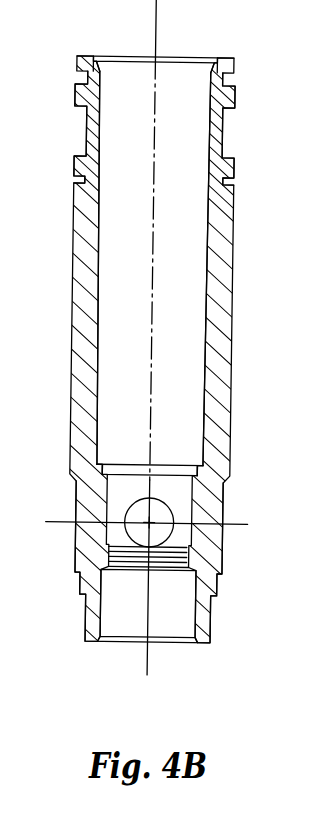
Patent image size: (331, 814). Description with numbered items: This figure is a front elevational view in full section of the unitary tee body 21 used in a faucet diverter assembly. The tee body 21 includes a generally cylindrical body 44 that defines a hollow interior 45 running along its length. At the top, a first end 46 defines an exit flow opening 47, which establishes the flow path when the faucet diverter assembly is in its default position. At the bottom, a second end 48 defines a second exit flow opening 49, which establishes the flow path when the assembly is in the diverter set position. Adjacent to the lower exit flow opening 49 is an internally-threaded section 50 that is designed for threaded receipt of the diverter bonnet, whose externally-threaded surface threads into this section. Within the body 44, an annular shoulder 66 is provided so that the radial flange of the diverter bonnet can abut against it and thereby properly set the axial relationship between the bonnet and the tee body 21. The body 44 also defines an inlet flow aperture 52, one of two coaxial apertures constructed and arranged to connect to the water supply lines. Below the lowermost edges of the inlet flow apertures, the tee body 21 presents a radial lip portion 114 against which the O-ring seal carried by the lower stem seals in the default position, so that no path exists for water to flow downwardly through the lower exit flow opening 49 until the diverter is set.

The tee body 21 is at (160, 349).
The cylindrical body 44 is at (235, 202).
The hollow interior 45 is at (135, 158).
The first end 46 is at (85, 114).
The exit flow opening 47 is at (189, 72).
The second end 48 is at (212, 618).
The exit flow opening 49 is at (118, 602).
The internally-threaded section 50 is at (112, 467).
The inlet flow aperture 52 is at (158, 513).
The annular shoulder 66 is at (205, 463).
The radial lip portion 114 is at (198, 546).